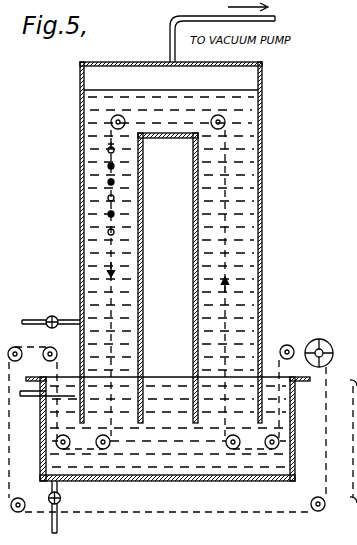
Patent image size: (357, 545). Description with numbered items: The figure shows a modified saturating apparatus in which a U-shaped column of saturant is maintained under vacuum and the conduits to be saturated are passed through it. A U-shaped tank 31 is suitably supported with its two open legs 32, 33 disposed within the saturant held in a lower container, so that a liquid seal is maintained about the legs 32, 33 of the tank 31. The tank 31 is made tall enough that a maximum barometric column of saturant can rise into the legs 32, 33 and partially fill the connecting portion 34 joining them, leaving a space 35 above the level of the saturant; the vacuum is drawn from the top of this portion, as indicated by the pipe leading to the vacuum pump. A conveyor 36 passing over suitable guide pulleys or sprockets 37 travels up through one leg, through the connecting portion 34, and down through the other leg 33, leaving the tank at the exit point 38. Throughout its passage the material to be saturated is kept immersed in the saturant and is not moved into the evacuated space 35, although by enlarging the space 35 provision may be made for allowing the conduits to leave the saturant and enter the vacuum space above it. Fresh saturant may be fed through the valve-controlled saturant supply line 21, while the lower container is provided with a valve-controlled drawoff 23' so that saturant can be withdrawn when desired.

The saturant supply line 21 is at (33, 318).
The drawoff 23' is at (74, 507).
The U-shaped tank 31 is at (262, 228).
The leg 32 is at (262, 306).
The leg 33 is at (143, 329).
The connecting portion 34 is at (240, 83).
The space 35 is at (148, 79).
The conveyor 36 is at (301, 343).
The guide pulleys 37 is at (326, 518).
The exit point 38 is at (65, 393).